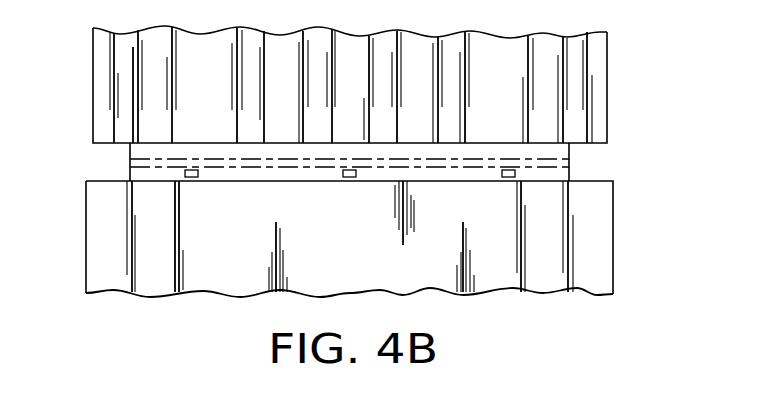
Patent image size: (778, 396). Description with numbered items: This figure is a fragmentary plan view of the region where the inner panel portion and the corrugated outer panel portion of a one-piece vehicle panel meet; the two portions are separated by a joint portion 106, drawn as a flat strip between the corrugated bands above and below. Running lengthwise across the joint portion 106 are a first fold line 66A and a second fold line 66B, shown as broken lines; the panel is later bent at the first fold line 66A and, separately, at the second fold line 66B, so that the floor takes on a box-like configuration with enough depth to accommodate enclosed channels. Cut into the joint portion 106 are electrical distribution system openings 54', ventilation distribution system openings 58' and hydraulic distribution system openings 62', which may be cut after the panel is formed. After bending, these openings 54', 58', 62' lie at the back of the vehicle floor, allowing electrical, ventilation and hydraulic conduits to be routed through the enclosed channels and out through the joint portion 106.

The joint portion 106 is at (130, 172).
The first fold line 66A is at (569, 159).
The second fold line 66B is at (569, 167).
The hydraulic distribution system openings 62' is at (199, 122).
The ventilation distribution system openings 58' is at (351, 122).
The electrical distribution system openings 54' is at (501, 122).